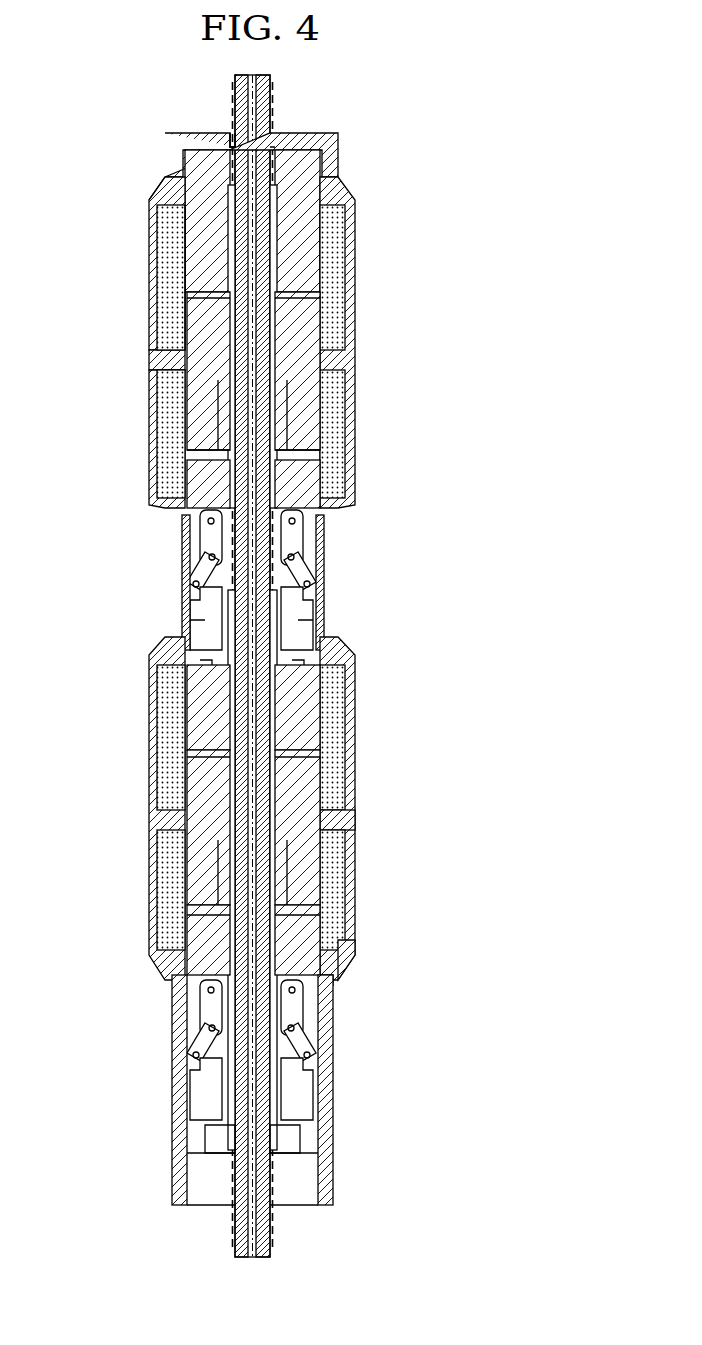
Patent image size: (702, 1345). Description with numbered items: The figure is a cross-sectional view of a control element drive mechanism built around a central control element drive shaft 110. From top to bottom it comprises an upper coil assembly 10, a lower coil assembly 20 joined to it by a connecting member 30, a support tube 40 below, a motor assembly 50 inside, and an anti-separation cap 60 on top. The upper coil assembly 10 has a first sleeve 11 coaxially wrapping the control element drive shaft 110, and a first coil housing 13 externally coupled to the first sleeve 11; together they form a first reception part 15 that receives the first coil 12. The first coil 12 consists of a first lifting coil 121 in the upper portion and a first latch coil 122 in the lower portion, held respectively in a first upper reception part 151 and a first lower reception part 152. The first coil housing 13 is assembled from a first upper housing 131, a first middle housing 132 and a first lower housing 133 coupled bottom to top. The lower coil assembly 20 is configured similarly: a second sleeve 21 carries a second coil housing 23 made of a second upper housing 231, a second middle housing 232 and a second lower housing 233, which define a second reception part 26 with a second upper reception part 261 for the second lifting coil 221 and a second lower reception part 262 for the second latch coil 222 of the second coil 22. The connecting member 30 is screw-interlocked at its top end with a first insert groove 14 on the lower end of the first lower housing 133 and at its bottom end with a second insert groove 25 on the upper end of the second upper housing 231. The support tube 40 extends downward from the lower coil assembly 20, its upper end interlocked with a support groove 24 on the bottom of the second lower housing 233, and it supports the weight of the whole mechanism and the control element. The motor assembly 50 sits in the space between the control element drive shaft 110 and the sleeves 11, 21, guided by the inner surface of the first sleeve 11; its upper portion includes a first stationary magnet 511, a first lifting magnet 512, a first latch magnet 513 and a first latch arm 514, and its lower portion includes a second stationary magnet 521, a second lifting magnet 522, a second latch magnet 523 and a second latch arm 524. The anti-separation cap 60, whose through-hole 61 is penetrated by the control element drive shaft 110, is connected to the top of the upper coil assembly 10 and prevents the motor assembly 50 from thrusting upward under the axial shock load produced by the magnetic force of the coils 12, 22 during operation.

The upper coil assembly 10 is at (249, 319).
The first sleeve 11 is at (352, 218).
The first coil 12 is at (392, 351).
The first lifting coil 121 is at (340, 302).
The first latch coil 122 is at (365, 434).
The first coil housing 13 is at (109, 342).
The first upper housing 131 is at (156, 249).
The first middle housing 132 is at (156, 361).
The first lower housing 133 is at (134, 439).
The first insert groove 14 is at (200, 546).
The first reception part 15 is at (109, 258).
The first upper reception part 151 is at (163, 190).
The first lower reception part 152 is at (178, 330).
The lower coil assembly 20 is at (255, 821).
The second sleeve 21 is at (350, 680).
The second coil 22 is at (109, 807).
The second lifting coil 221 is at (160, 789).
The second latch coil 222 is at (136, 890).
The second coil housing 23 is at (399, 807).
The second upper housing 231 is at (345, 726).
The second middle housing 232 is at (345, 820).
The second lower housing 233 is at (371, 890).
The support groove 24 is at (200, 1002).
The second insert groove 25 is at (190, 605).
The second reception part 26 is at (387, 986).
The second upper reception part 261 is at (352, 922).
The second lower reception part 262 is at (360, 999).
The connecting member 30 is at (324, 617).
The support tube 40 is at (172, 1113).
The motor assembly 50 is at (543, 1035).
The first stationary magnet 511 is at (300, 165).
The first lifting magnet 512 is at (300, 295).
The first latch magnet 513 is at (303, 480).
The first latch arm 514 is at (305, 565).
The second stationary magnet 521 is at (192, 692).
The second lifting magnet 522 is at (195, 757).
The second latch magnet 523 is at (188, 920).
The second latch arm 524 is at (205, 1033).
The anti-separation cap 60 is at (165, 142).
The through-hole 61 is at (232, 136).
The control element drive shaft 110 is at (233, 1248).